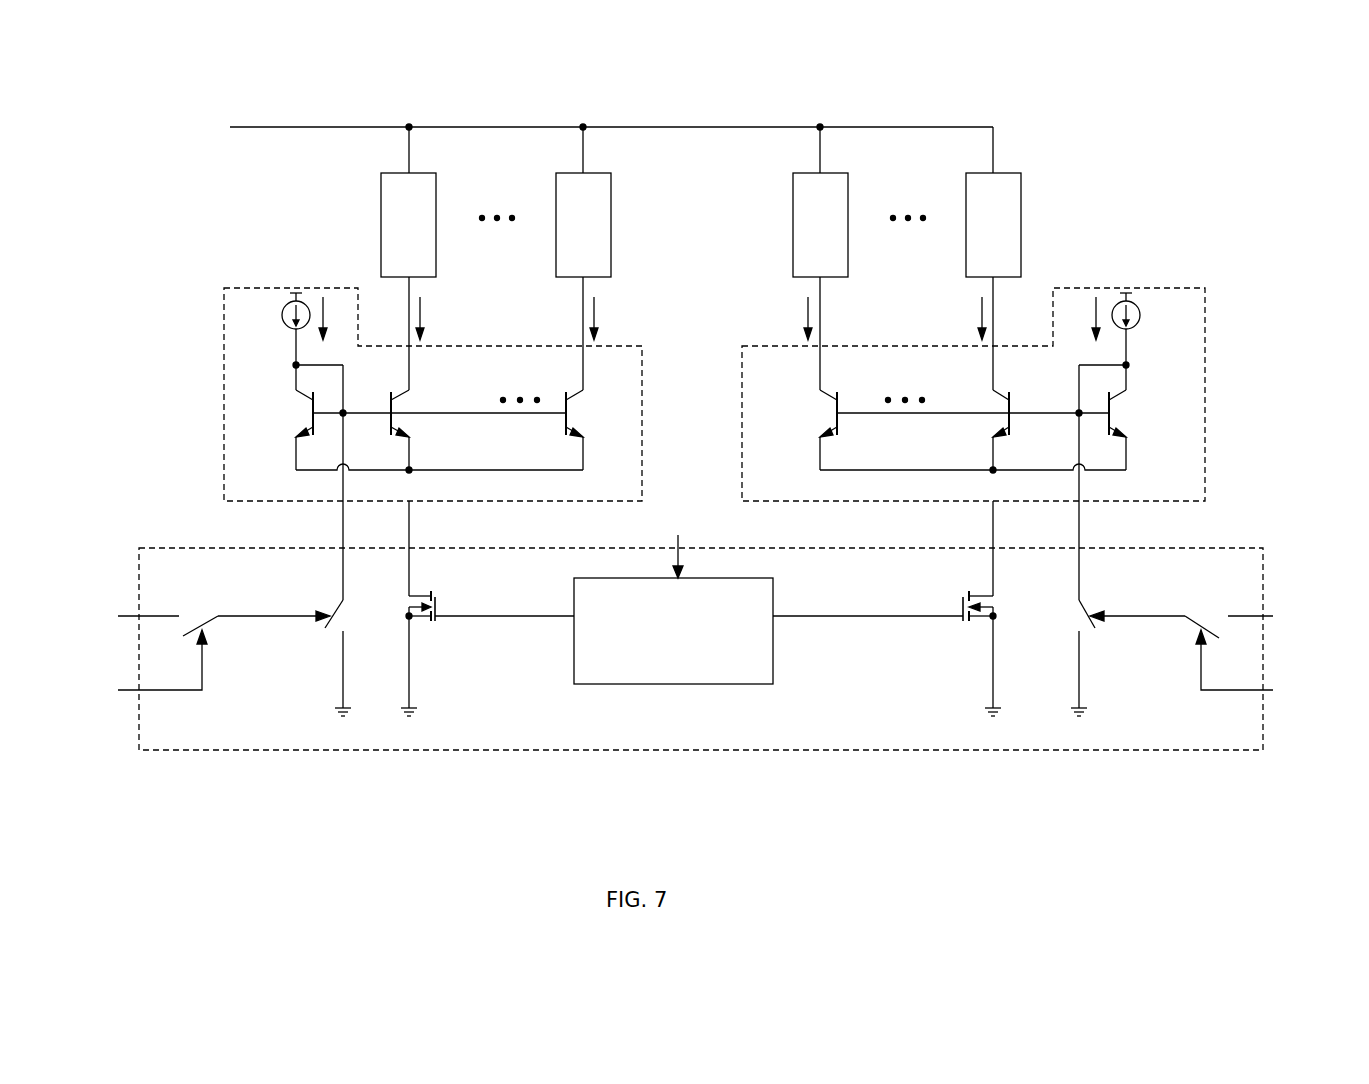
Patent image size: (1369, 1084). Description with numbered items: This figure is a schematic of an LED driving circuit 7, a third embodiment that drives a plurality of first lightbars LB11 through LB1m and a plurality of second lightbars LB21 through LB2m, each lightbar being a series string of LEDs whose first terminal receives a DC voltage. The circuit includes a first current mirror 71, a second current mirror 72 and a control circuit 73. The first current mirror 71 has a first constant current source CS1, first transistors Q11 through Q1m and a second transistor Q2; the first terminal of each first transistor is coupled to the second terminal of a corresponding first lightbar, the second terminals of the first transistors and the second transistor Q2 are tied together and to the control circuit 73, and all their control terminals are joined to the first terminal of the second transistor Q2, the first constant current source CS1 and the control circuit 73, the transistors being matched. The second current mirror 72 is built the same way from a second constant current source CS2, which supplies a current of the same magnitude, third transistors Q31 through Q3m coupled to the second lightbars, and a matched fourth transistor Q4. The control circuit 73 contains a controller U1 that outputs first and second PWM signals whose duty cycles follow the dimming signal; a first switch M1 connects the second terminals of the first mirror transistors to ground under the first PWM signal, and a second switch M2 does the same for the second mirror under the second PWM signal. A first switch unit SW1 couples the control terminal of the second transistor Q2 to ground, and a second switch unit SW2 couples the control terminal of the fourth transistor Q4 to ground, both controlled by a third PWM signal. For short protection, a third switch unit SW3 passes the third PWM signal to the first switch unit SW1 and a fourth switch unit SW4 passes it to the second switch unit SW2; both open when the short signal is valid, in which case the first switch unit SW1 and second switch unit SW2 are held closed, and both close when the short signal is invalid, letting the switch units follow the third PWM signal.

The LED driving circuit 7 is at (122, 800).
The first current mirror 71 is at (222, 456).
The second current mirror 72 is at (1205, 465).
The control circuit 73 is at (1152, 752).
The first lightbar LB11 is at (414, 173).
The first lightbar LB1m is at (588, 173).
The second lightbar LB21 is at (825, 173).
The second lightbar LB2m is at (998, 173).
The first constant current source CS1 is at (271, 311).
The second constant current source CS2 is at (1149, 311).
The second transistor Q2 is at (288, 430).
The first transistor Q11 is at (426, 430).
The first transistor Q1m is at (604, 430).
The third transistor Q31 is at (805, 430).
The third transistor Q3m is at (972, 430).
The fourth transistor Q4 is at (1131, 430).
The first switch M1 is at (400, 608).
The second switch M2 is at (998, 608).
The first switch unit SW1 is at (310, 608).
The second switch unit SW2 is at (1107, 608).
The third switch unit SW3 is at (180, 645).
The fourth switch unit SW4 is at (1223, 645).
The controller U1 is at (722, 578).